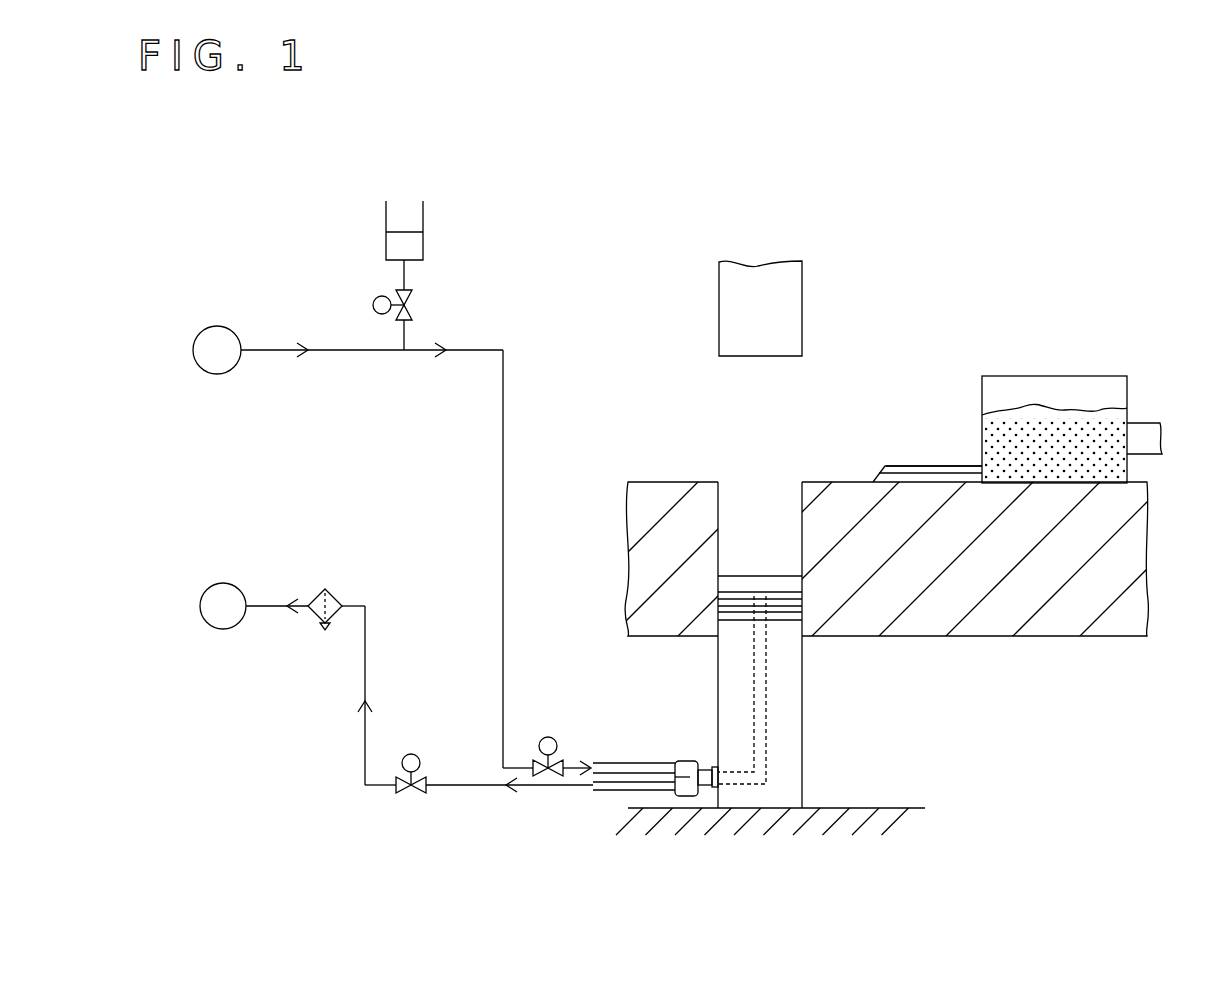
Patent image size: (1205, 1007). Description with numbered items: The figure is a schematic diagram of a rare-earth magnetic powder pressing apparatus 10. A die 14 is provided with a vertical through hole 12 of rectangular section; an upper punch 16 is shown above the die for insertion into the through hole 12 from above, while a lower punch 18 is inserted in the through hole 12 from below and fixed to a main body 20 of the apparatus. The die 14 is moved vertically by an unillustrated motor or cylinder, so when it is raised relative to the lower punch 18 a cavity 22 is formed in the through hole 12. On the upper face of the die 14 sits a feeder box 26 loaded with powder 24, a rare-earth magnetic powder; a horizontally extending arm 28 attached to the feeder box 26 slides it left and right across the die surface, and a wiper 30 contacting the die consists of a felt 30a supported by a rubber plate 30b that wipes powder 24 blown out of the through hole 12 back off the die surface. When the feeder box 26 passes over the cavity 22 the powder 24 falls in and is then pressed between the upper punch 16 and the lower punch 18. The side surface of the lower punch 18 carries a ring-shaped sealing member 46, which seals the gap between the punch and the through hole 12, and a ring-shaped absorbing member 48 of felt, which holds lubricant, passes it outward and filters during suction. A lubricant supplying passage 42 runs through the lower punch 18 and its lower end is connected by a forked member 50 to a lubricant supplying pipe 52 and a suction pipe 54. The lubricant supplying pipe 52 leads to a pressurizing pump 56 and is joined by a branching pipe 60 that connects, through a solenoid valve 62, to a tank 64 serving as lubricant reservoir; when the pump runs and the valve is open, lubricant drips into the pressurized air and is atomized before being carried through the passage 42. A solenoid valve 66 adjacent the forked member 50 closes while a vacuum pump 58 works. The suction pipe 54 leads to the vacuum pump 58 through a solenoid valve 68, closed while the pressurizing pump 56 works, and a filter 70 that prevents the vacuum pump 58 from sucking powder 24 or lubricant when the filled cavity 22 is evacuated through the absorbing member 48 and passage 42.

The rare-earth magnetic powder pressing apparatus 10 is at (188, 148).
The through hole 12 is at (738, 482).
The die 14 is at (655, 492).
The upper punch 16 is at (802, 312).
The lower punch 18 is at (802, 740).
The main body 20 is at (872, 808).
The cavity 22 is at (750, 551).
The powder 24 is at (1012, 420).
The feeder box 26 is at (1095, 376).
The arm 28 is at (1143, 425).
The wiper 30 is at (916, 407).
The felt 30a is at (903, 477).
The rubber plate 30b is at (934, 433).
The lubricant supplying passage 42 is at (750, 663).
The sealing member 46 is at (802, 612).
The absorbing member 48 is at (802, 596).
The forked member 50 is at (688, 762).
The lubricant supplying pipe 52 is at (645, 762).
The suction pipe 54 is at (608, 795).
The pressurizing pump 56 is at (235, 328).
The vacuum pump 58 is at (240, 626).
The branching pipe 60 is at (408, 338).
The solenoid valve 62 is at (372, 302).
The tank 64 is at (423, 218).
The solenoid valve 66 is at (548, 736).
The solenoid valve 68 is at (414, 753).
The filter 70 is at (336, 594).